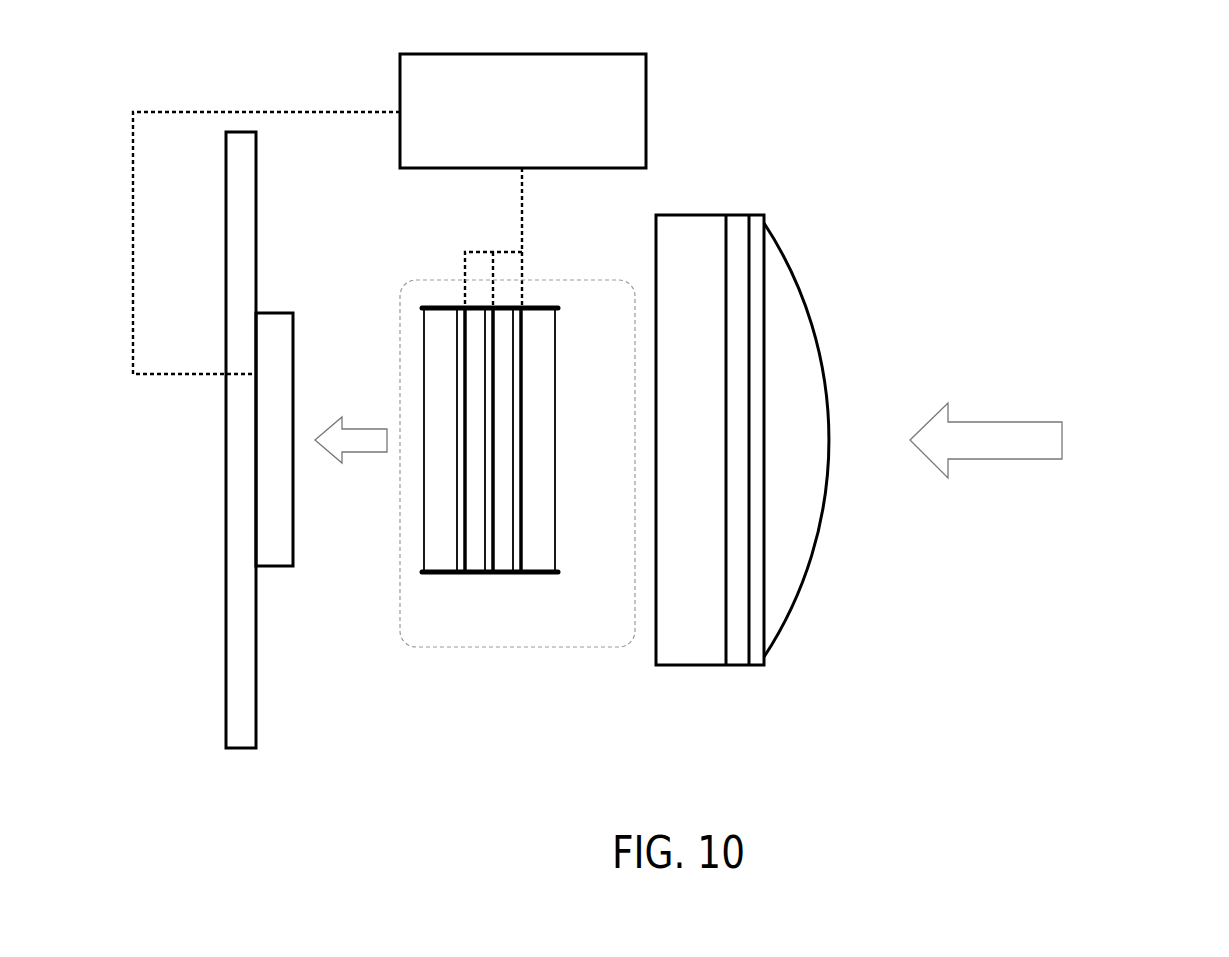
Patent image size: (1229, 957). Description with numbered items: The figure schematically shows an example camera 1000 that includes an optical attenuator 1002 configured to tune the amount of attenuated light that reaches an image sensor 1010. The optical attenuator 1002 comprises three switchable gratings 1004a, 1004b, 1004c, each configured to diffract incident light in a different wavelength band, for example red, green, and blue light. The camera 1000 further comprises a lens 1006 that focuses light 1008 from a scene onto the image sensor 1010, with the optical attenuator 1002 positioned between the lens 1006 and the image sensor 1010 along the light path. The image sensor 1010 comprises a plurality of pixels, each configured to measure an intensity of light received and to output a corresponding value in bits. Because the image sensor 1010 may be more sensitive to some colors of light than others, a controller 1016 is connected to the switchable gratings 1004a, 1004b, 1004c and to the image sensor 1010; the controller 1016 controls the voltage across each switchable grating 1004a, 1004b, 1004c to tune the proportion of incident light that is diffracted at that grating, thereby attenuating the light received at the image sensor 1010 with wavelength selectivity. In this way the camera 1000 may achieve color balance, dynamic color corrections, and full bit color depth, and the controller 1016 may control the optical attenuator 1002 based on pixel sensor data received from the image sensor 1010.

The camera 1000 is at (1100, 130).
The optical attenuator 1002 is at (517, 463).
The switchable grating 1004a is at (523, 460).
The switchable grating 1004b is at (495, 503).
The switchable grating 1004c is at (467, 550).
The lens 1006 is at (777, 268).
The light 1008 is at (1016, 420).
The image sensor 1010 is at (275, 567).
The controller 1016 is at (523, 111).